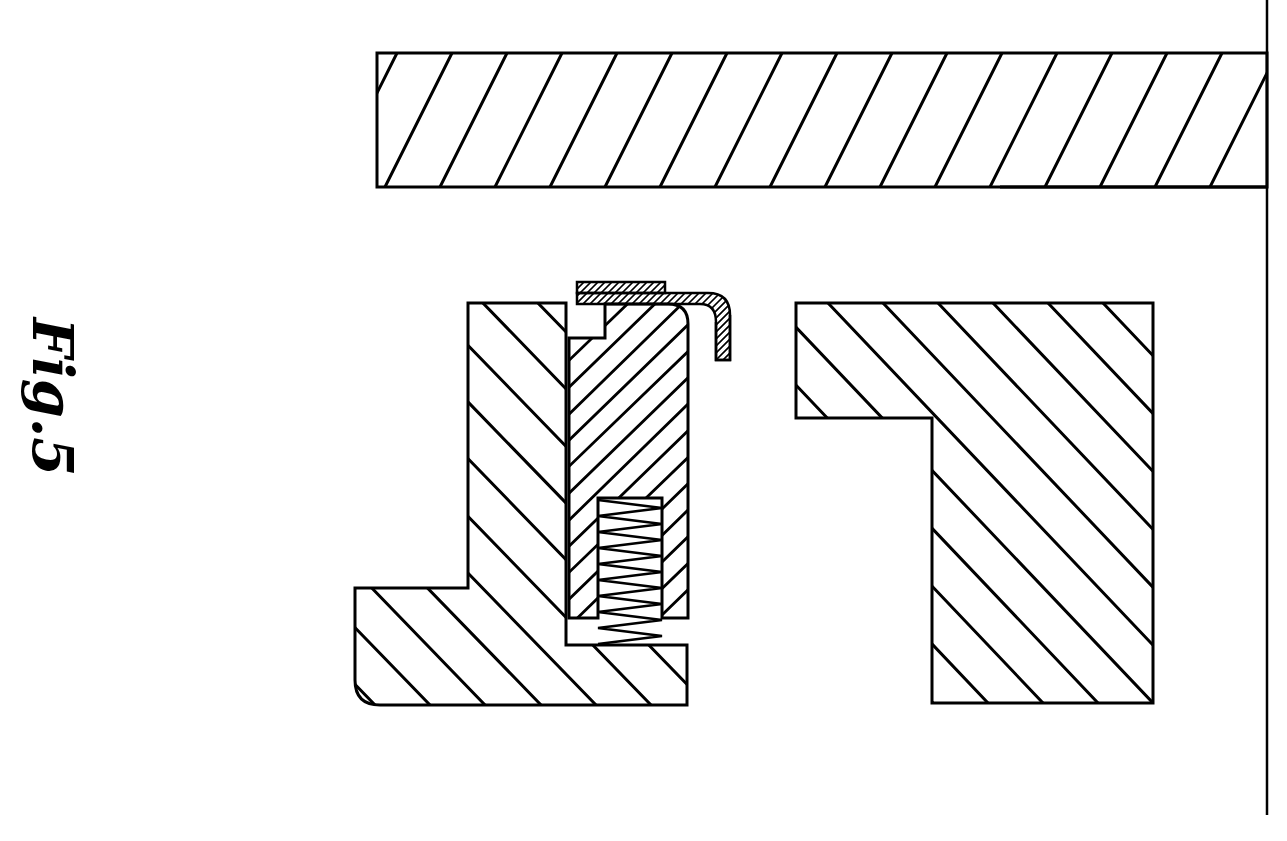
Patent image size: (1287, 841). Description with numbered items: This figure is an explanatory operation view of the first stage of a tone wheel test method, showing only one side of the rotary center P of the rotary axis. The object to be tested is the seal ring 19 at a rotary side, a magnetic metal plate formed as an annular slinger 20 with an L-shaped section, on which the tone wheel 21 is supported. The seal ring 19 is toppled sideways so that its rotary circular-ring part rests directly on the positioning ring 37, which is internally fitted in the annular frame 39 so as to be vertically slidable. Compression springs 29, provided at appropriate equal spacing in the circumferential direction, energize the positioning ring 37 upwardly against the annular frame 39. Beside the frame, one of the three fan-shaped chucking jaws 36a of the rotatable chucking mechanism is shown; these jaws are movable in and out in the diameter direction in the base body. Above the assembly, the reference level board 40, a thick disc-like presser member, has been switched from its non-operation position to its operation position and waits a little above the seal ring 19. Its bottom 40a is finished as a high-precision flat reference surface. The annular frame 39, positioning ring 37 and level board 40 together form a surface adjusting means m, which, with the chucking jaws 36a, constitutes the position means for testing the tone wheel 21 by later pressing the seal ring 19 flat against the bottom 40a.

The reference level board 40 is at (950, 132).
The bottom of the reference level board 40a is at (1127, 198).
The surface adjusting means m is at (408, 225).
The annular frame 39 is at (433, 623).
The positioning ring 37 is at (658, 455).
The compression spring 29 is at (653, 623).
The tone wheel 21 is at (575, 282).
The seal ring at a rotary side 19 is at (726, 286).
The annular slinger 20 is at (728, 362).
The chucking jaw 36a is at (1125, 657).
The rotary center P is at (1267, 383).